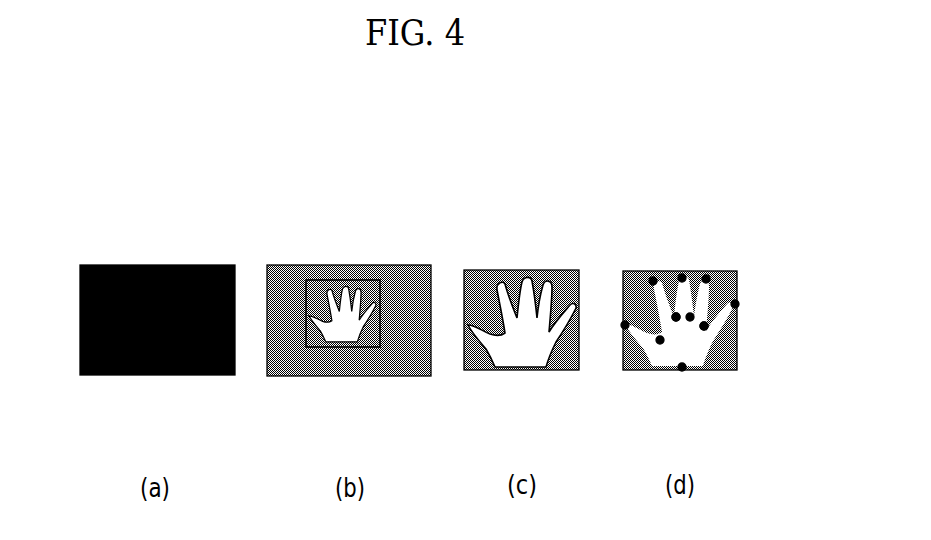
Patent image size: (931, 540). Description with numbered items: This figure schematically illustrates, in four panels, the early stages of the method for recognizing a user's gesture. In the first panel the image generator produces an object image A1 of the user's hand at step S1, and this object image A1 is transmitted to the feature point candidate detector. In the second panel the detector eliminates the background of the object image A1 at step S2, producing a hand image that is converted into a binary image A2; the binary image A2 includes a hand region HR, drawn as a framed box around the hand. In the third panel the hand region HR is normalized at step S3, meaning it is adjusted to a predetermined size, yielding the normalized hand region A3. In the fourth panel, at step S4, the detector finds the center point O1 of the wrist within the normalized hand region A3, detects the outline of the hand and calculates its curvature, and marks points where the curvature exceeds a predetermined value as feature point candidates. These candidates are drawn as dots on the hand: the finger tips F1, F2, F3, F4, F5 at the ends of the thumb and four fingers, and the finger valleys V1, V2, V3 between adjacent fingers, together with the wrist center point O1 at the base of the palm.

The object image generating step S1 is at (185, 233).
The object image A1 is at (153, 376).
The background eliminating step S2 is at (358, 233).
The binary image A2 is at (348, 377).
The hand region HR is at (378, 281).
The hand region normalizing step S3 is at (533, 233).
The normalized hand region A3 is at (488, 371).
The feature point candidate detecting step S4 is at (713, 180).
The finger tip F1 is at (625, 326).
The finger tip F2 is at (653, 281).
The finger tip F3 is at (682, 278).
The finger tip F4 is at (706, 279).
The finger tip F5 is at (738, 304).
The finger valley V1 is at (660, 340).
The finger valley V2 is at (676, 318).
The finger valley V3 is at (705, 328).
The center point of wrist O1 is at (682, 368).